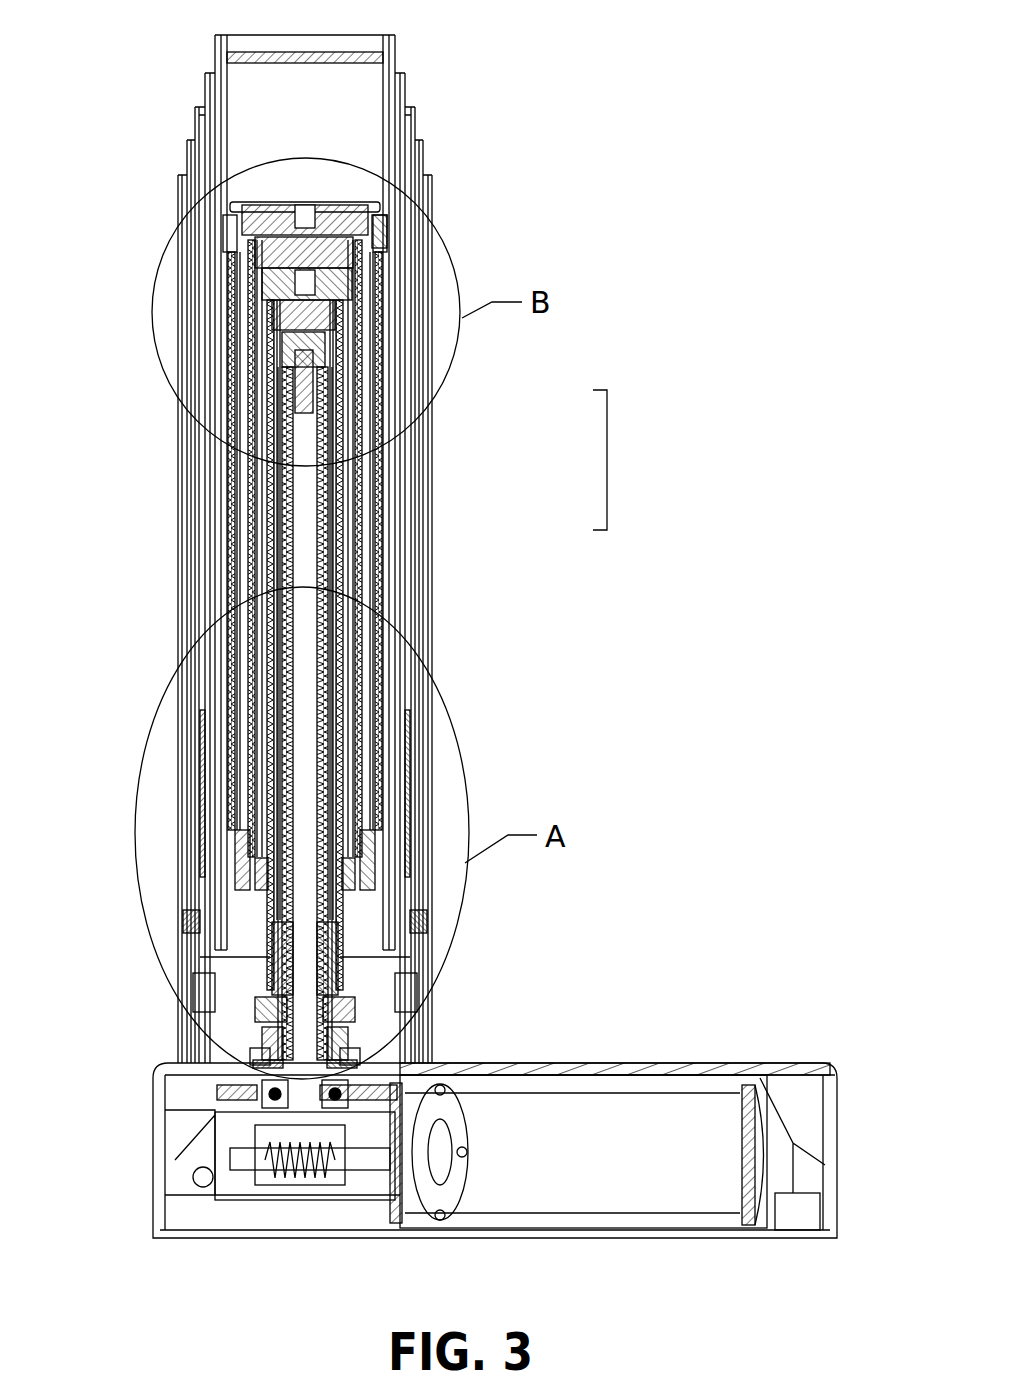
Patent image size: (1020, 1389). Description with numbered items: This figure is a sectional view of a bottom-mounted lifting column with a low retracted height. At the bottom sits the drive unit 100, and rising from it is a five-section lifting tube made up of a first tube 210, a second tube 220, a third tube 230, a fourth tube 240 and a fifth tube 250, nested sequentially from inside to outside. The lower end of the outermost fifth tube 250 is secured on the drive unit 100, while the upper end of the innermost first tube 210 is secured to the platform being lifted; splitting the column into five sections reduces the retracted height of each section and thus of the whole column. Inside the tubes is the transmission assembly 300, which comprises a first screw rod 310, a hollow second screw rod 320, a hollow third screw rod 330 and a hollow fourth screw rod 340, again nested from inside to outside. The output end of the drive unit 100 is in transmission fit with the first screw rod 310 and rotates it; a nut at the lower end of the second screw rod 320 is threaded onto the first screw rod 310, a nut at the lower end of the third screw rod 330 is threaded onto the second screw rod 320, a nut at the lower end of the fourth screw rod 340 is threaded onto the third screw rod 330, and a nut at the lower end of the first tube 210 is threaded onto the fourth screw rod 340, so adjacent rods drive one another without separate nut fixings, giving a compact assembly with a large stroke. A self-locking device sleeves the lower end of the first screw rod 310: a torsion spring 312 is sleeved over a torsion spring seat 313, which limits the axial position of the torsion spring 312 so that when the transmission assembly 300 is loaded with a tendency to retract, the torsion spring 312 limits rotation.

The drive unit 100 is at (513, 1108).
The first tube 210 is at (390, 50).
The second tube 220 is at (401, 93).
The third tube 230 is at (412, 137).
The fourth tube 240 is at (420, 170).
The fifth tube 250 is at (432, 200).
The transmission assembly 300 is at (448, 631).
The first screw rod 310 is at (308, 577).
The second screw rod 320 is at (332, 538).
The third screw rod 330 is at (353, 502).
The fourth screw rod 340 is at (383, 453).
The torsion spring 312 is at (263, 1037).
The torsion spring seat 313 is at (260, 1058).